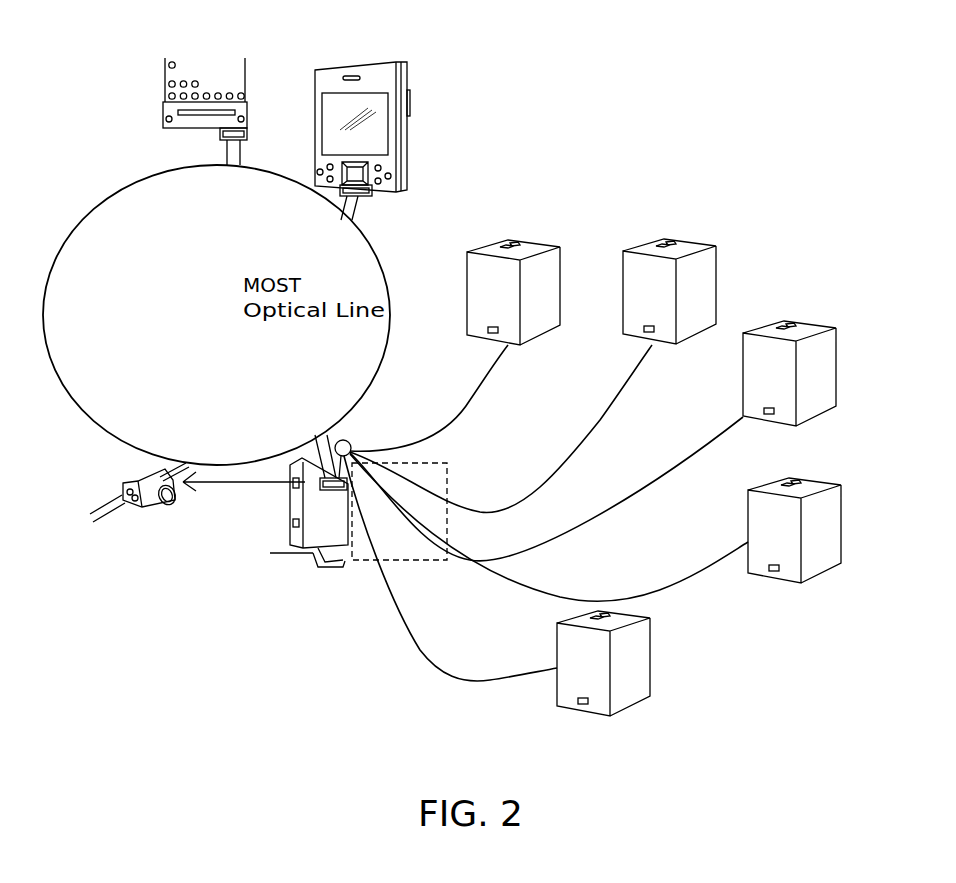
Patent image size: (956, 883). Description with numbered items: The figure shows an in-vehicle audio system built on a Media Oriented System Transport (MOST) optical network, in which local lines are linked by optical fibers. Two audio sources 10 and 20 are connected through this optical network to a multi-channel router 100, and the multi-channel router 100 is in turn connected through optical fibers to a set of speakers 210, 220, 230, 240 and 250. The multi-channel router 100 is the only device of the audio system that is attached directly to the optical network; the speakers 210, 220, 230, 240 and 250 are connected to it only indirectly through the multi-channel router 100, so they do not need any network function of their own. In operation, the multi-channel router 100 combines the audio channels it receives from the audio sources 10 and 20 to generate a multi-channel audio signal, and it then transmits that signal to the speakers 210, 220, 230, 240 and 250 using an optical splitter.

The audio source 10 is at (204, 57).
The audio source 20 is at (362, 62).
The multi-channel router 100 is at (290, 508).
The speaker 210 is at (533, 240).
The speaker 220 is at (690, 240).
The speaker 230 is at (808, 322).
The speaker 240 is at (815, 478).
The speaker 250 is at (651, 655).